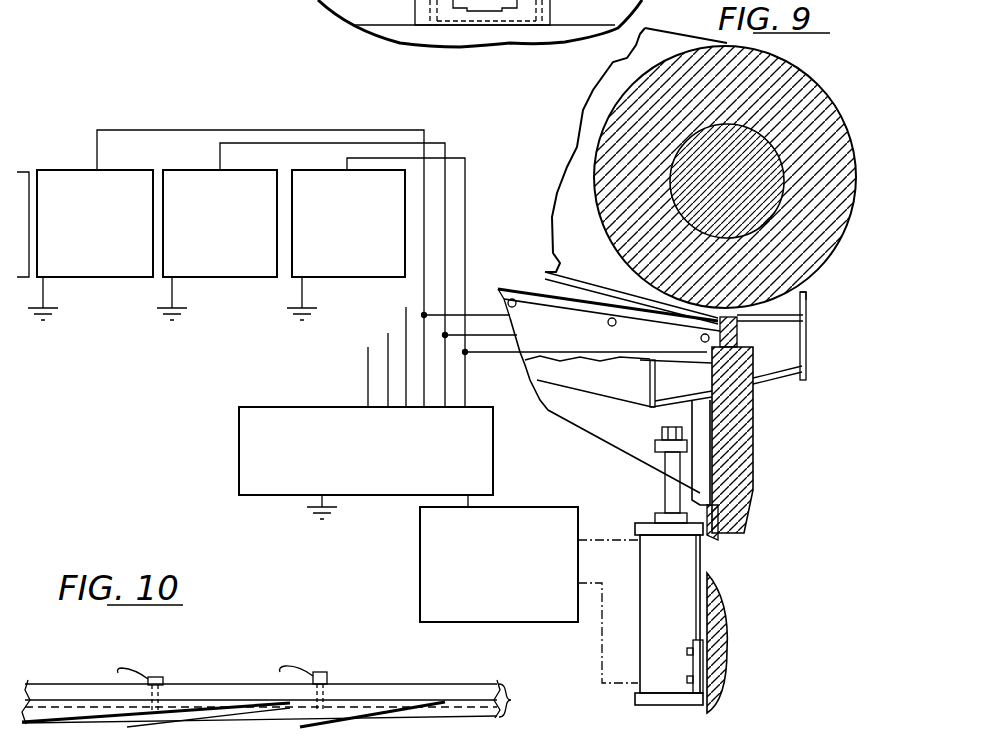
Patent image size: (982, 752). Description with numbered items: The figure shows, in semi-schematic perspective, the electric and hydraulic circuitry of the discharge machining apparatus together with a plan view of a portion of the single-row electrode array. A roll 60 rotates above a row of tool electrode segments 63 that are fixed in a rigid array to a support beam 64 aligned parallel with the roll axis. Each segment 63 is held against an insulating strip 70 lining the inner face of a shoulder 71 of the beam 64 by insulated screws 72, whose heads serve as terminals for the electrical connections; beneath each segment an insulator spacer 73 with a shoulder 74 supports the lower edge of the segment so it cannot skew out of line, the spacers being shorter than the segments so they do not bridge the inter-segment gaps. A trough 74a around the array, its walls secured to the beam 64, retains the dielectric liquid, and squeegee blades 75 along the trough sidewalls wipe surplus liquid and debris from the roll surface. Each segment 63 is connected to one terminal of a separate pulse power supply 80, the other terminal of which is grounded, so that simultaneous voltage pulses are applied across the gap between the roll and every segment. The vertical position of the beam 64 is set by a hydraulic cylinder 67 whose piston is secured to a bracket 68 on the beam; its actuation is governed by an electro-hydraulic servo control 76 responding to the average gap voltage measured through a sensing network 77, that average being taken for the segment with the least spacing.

In FIG. 9, the roll 60 is at (812, 86).
In FIG. 9, the tool electrode segments 63 is at (556, 276).
In FIG. 10, the tool electrode segments 63 is at (400, 722).
In FIG. 9, the support beam 64 is at (754, 468).
In FIG. 10, the support beam 64 is at (386, 684).
In FIG. 9, the hydraulic cylinder 67 is at (643, 647).
In FIG. 9, the bracket 68 is at (655, 446).
In FIG. 9, the insulating strip 70 is at (609, 321).
In FIG. 10, the insulating strip 70 is at (226, 700).
In FIG. 9, the shoulder 71 is at (710, 350).
In FIG. 9, the insulated screws 72 is at (612, 325).
In FIG. 10, the insulated screws 72 is at (158, 676).
In FIG. 9, the insulator spacer 73 is at (730, 345).
In FIG. 10, the insulator spacer 73 is at (480, 707).
In FIG. 9, the shoulder 74 is at (740, 347).
In FIG. 10, the shoulder 74 is at (497, 700).
In FIG. 9, the trough 74a is at (593, 387).
In FIG. 9, the squeegee blades 75 is at (813, 298).
In FIG. 9, the electro-hydraulic servo control 76 is at (420, 569).
In FIG. 9, the sensing network 77 is at (243, 479).
In FIG. 9, the pulse power supply 80 is at (100, 277).